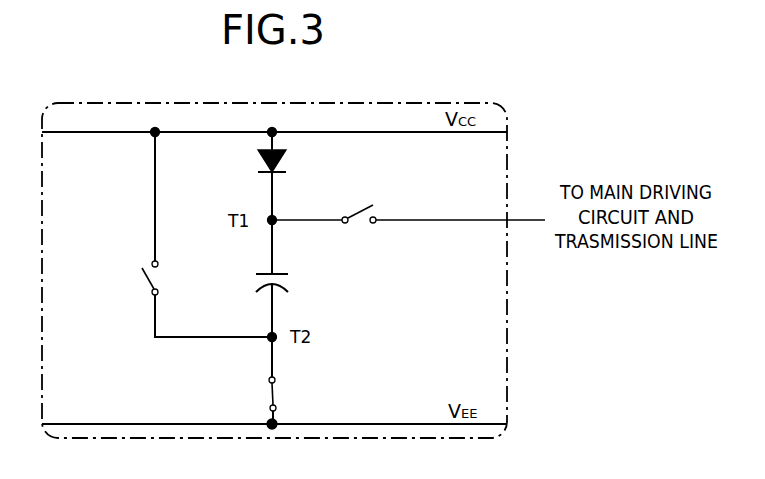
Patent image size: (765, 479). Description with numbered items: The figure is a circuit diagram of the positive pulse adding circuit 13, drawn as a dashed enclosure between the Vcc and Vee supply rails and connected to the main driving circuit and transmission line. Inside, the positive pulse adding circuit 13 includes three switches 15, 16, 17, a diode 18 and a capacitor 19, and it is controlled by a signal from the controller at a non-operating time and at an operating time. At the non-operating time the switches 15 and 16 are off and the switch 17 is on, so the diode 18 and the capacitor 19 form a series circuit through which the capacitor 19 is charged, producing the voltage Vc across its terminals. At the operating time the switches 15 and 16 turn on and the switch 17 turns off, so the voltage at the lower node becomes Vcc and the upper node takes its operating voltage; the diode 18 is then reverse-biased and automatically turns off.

The positive pulse adding circuit 13 is at (507, 306).
The switch 15 is at (361, 201).
The switch 16 is at (137, 281).
The switch 17 is at (281, 395).
The diode 18 is at (291, 166).
The capacitor 19 is at (293, 283).